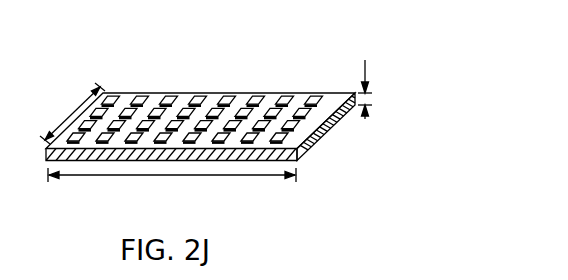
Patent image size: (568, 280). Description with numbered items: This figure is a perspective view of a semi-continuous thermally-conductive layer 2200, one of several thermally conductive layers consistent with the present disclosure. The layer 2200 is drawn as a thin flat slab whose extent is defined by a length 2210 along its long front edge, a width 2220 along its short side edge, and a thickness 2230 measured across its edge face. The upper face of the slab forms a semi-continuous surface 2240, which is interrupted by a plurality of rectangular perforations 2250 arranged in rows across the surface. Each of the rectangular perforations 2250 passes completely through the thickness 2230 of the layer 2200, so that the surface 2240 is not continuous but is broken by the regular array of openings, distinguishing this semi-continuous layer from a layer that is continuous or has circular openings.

The semi-continuous thermally-conductive layer 2200 is at (227, 63).
The length 2210 is at (172, 183).
The width 2220 is at (61, 113).
The thickness 2230 is at (388, 89).
The semi-continuous surface 2240 is at (309, 136).
The rectangular perforations 2250 is at (168, 100).